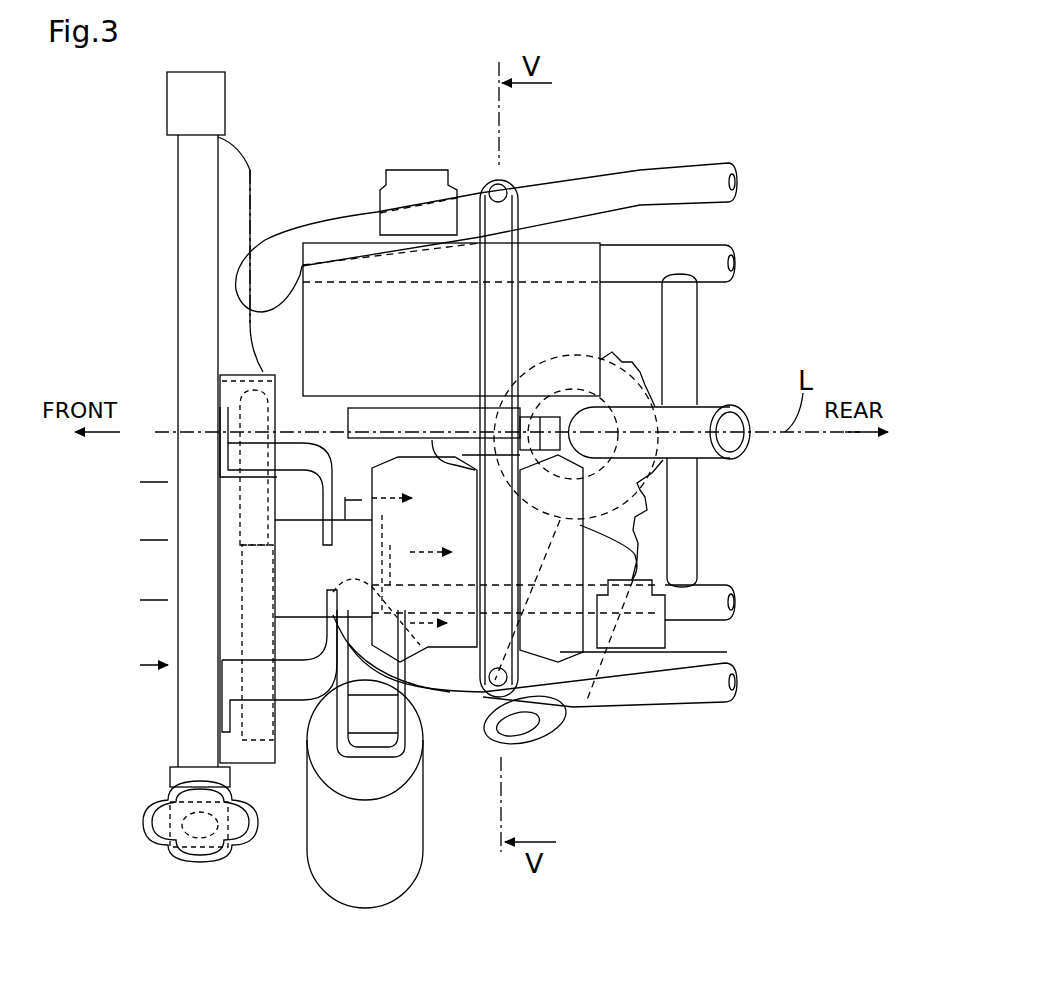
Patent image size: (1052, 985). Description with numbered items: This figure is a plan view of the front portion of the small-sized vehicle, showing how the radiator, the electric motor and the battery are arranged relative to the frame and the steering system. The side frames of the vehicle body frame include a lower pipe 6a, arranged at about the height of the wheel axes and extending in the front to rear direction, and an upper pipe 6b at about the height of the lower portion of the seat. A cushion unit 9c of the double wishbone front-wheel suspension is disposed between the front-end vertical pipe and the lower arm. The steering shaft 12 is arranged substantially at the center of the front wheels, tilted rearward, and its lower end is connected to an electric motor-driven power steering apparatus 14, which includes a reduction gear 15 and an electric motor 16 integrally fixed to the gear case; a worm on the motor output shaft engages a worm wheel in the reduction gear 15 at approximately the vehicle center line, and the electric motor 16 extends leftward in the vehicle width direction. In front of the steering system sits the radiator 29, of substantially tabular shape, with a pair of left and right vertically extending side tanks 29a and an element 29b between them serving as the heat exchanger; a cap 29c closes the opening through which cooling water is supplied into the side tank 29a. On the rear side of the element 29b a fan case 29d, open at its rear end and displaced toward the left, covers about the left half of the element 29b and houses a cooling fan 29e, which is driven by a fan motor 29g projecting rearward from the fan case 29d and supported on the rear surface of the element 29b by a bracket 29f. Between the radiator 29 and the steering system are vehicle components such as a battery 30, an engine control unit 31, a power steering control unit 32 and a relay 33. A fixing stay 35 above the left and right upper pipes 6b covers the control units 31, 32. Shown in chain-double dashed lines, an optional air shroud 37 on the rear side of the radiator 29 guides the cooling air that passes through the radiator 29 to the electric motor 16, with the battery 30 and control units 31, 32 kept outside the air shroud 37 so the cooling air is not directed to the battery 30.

The radiator 29 is at (168, 304).
The side tank 29a is at (167, 103).
The element 29b is at (176, 521).
The cap 29c is at (200, 862).
The fan case 29d is at (220, 375).
The cooling fan 29e is at (240, 630).
The bracket 29f is at (293, 448).
The fan motor 29g is at (347, 500).
The battery 30 is at (302, 303).
The engine control unit 31 is at (437, 410).
The power steering control unit 32 is at (398, 458).
The relay 33 is at (413, 170).
The fixing stay 35 is at (518, 205).
The air shroud 37 is at (250, 195).
The lower pipe 6a is at (700, 247).
The upper pipe 6b is at (582, 175).
The steering shaft 12 is at (707, 405).
The power steering apparatus 14 is at (632, 352).
The reduction gear 15 is at (608, 360).
The electric motor 16 is at (577, 717).
The cushion unit 9c is at (423, 832).